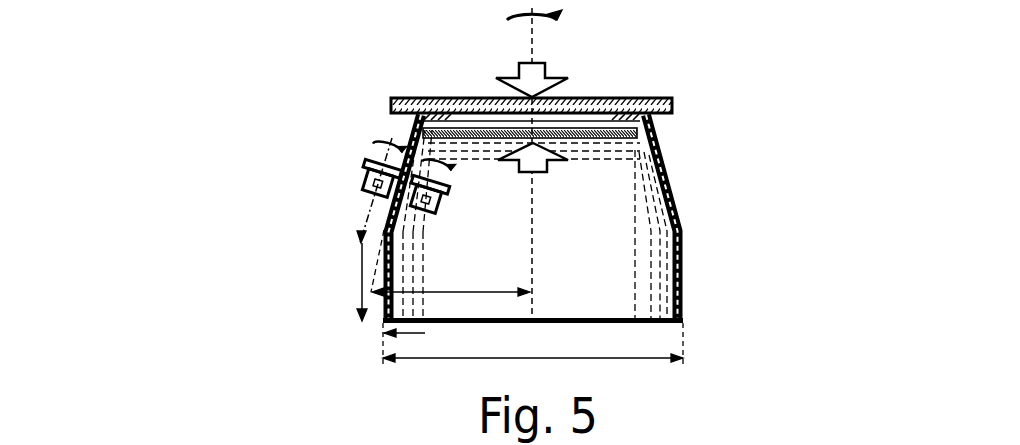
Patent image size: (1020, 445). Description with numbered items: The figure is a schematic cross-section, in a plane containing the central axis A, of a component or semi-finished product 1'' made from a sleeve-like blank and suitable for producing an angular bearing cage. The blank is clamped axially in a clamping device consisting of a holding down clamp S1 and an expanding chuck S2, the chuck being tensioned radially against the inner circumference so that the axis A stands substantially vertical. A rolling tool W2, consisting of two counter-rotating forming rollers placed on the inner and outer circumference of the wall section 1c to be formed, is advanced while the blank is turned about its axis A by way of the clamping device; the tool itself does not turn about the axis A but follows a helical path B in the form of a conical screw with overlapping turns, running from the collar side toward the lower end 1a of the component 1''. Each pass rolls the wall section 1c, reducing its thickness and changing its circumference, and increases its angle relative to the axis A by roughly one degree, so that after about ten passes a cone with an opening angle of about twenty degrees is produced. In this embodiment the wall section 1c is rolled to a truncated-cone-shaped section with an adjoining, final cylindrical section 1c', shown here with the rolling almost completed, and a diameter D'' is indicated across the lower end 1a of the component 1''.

The component or semi-finished product 1'' is at (127, 182).
The bottom wall 1a is at (637, 324).
The wall section to be formed 1c is at (602, 219).
The adjoining cylindrical section 1c' is at (618, 225).
The axis of blank A is at (533, 52).
The holding down clamp S1 is at (672, 103).
The expanding chuck S2 is at (573, 143).
The rolling tool W2 is at (362, 180).
The helical path B is at (497, 168).
The bottom diameter D'' is at (533, 344).